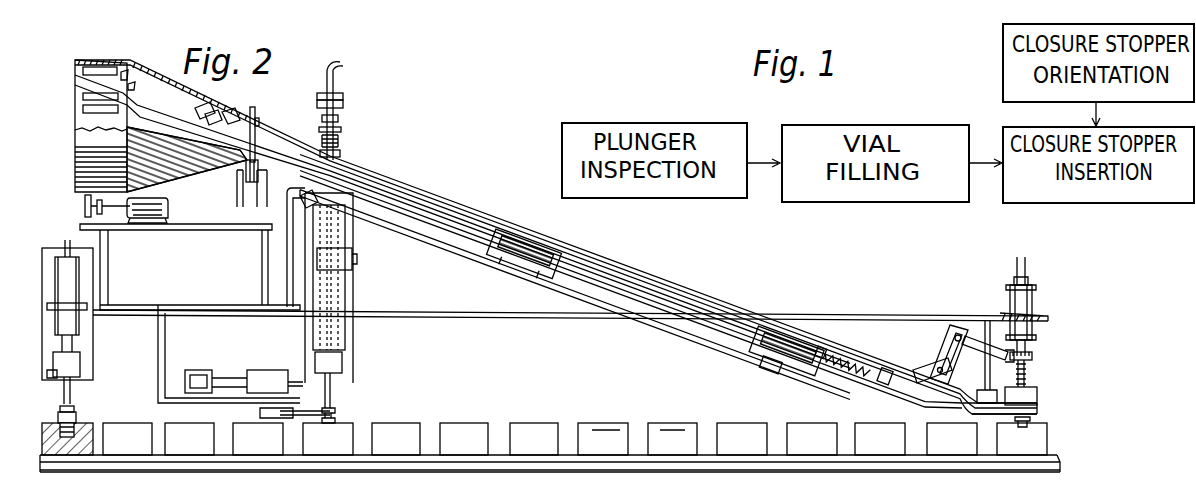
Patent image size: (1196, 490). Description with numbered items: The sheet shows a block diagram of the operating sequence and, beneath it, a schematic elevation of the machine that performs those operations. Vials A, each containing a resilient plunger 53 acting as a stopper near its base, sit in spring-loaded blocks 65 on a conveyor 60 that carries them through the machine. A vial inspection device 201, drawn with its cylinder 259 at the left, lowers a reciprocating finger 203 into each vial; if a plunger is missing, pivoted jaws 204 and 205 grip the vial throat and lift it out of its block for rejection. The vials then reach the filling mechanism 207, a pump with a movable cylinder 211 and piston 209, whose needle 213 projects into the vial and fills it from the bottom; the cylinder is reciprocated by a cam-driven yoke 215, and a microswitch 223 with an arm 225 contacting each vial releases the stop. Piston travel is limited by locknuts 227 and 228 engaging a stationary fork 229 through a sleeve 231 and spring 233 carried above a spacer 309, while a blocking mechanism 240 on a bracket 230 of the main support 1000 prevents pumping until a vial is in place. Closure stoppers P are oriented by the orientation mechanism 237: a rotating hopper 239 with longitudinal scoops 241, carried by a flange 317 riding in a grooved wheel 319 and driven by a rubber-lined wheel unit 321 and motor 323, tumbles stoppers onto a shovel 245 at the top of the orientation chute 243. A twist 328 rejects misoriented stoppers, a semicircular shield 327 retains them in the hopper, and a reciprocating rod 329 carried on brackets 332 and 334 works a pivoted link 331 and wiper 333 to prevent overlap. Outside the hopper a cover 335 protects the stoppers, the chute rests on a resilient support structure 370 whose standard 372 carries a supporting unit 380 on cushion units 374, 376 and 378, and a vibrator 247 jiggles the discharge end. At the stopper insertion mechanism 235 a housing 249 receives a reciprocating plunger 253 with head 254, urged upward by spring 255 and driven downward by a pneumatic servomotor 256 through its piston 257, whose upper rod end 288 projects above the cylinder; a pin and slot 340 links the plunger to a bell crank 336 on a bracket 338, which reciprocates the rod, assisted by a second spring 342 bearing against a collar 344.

The vial with resilient plunger 53 is at (72, 436).
The conveyor 60 is at (536, 412).
The spring-loaded blocks 65 is at (663, 434).
The vial inspection device 201 is at (99, 333).
The reciprocating finger 203 is at (72, 392).
The pivoted gate or jaw 204 is at (49, 385).
The pivoted gate or jaw 205 is at (80, 366).
The filling mechanism 207 is at (378, 340).
The piston 209 is at (341, 154).
The movable cylinder 211 is at (333, 298).
The needle or discharge tube 213 is at (333, 395).
The yoke 215 is at (354, 284).
The microswitch 223 is at (260, 413).
The microswitch arm 225 is at (336, 413).
The locknut 227 is at (343, 104).
The locknut 228 is at (343, 92).
The stationary fork or stop mechanism 229 is at (340, 118).
The bracket 230 is at (162, 352).
The sleeve 231 is at (342, 129).
The spring 233 is at (340, 139).
The closure stopper insertion mechanism 235 is at (1056, 380).
The orientation mechanism 237 is at (271, 99).
The rotating hopper or drum 239 is at (88, 158).
The blocking mechanism 240 is at (253, 357).
The longitudinal scoops 241 is at (88, 108).
The orientation chute 243 is at (86, 80).
The shovel 245 is at (120, 80).
The vibrator 247 is at (962, 396).
The housing 249 is at (1038, 403).
The reciprocating plunger 253 is at (1034, 358).
The plunger head 254 is at (1034, 353).
The spring 255 is at (1028, 368).
The pneumatically operated servomotor 256 is at (1034, 292).
The reciprocating piston 257 is at (1030, 345).
The plunger cylinder 259 is at (70, 280).
The rod end 288 is at (1026, 262).
The spacer 309 is at (345, 146).
The flange 317 is at (255, 110).
The grooved wheel 319 is at (243, 181).
The rubber lined motor driven wheel unit 321 is at (85, 204).
The motor 323 is at (168, 208).
The semicircular shield 327 is at (259, 122).
The twist or bend 328 is at (132, 108).
The reciprocating rod 329 is at (497, 232).
The pivoted link 331 is at (228, 108).
The bracket 332 is at (269, 183).
The wiper 333 is at (197, 112).
The guide bracket 334 is at (857, 320).
The cover 335 is at (440, 182).
The bell crank 336 is at (935, 357).
The bracket 338 is at (957, 324).
The pin and slot arrangement 340 is at (1006, 350).
The second spring 342 is at (844, 385).
The fixedly carried collar 344 is at (897, 351).
The stationary resilient support structure 370 is at (750, 361).
The stationary standard or bracket 372 is at (287, 262).
The cushion unit 374 is at (360, 215).
The cushion unit 376 is at (515, 276).
The cushion unit 378 is at (787, 390).
The chute supporting unit 380 is at (457, 246).
The main support 1000 is at (582, 322).
The vials A is at (76, 412).
The stoppers P is at (136, 82).